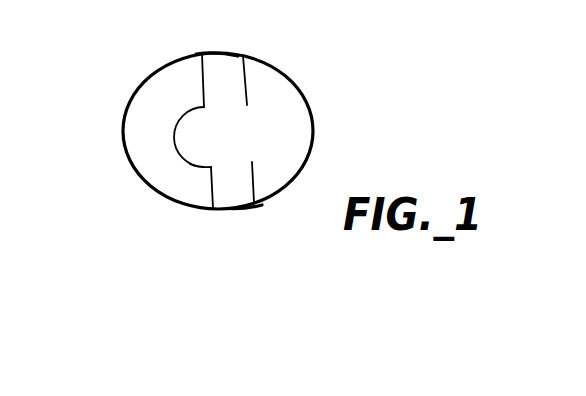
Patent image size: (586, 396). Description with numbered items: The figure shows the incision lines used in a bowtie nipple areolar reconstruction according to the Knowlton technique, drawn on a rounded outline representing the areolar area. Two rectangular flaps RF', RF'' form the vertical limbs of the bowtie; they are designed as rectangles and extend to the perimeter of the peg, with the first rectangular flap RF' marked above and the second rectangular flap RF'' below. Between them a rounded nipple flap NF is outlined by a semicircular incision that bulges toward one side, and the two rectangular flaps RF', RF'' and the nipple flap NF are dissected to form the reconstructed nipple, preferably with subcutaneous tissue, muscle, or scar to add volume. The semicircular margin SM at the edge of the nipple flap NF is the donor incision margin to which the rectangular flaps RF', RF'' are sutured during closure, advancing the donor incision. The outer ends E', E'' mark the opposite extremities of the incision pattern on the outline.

The first edge portion of lens body E' is at (184, 28).
The rectangular flap RF' is at (150, 73).
The nipple flap NF is at (205, 138).
The semicircular margin SM is at (193, 166).
The rectangular flap RF'' is at (180, 204).
The second edge portion of lens body E'' is at (281, 231).